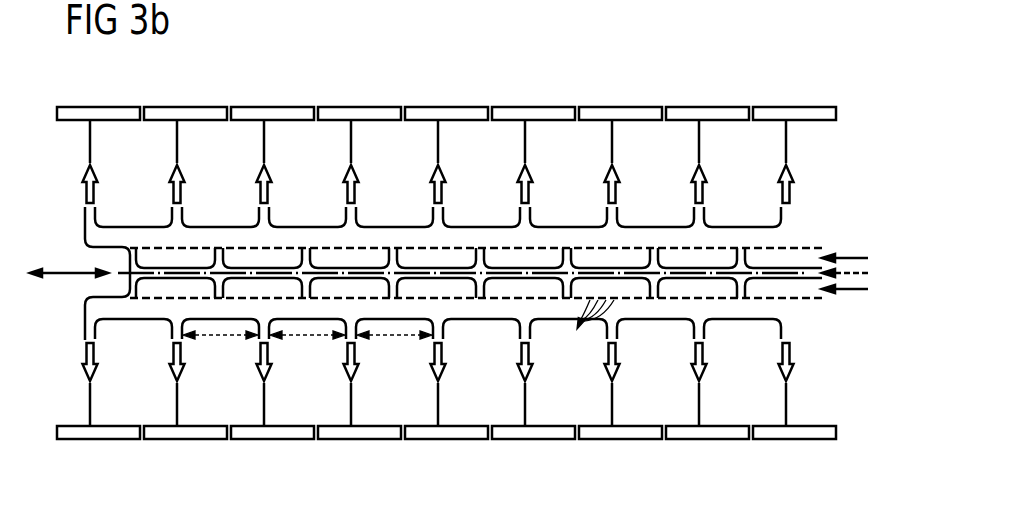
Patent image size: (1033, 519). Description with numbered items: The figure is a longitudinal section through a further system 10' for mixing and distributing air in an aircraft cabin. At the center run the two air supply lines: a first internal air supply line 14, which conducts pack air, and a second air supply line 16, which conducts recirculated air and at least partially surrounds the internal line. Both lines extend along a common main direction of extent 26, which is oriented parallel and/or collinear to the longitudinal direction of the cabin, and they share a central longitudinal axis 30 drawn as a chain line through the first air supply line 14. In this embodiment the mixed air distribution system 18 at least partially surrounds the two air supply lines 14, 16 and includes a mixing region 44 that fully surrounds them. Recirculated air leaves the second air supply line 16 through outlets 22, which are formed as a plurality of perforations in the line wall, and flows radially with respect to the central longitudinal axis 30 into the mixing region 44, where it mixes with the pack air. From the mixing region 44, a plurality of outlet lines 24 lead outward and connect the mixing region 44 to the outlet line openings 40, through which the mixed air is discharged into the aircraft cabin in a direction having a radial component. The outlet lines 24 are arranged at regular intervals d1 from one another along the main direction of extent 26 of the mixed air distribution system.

The system for mixing and distributing air 10' is at (467, 263).
The first internal air supply line 14 is at (811, 287).
The second air supply line 16 is at (781, 301).
The mixed air distribution system 18 is at (788, 235).
The outlets 22 is at (588, 331).
The outlet lines 24 is at (439, 140).
The main direction of extent 26 is at (68, 278).
The central longitudinal axis 30 is at (372, 245).
The outlet line openings 40 is at (706, 107).
The mixing region 44 is at (738, 237).
The regular interval d1 is at (222, 340).